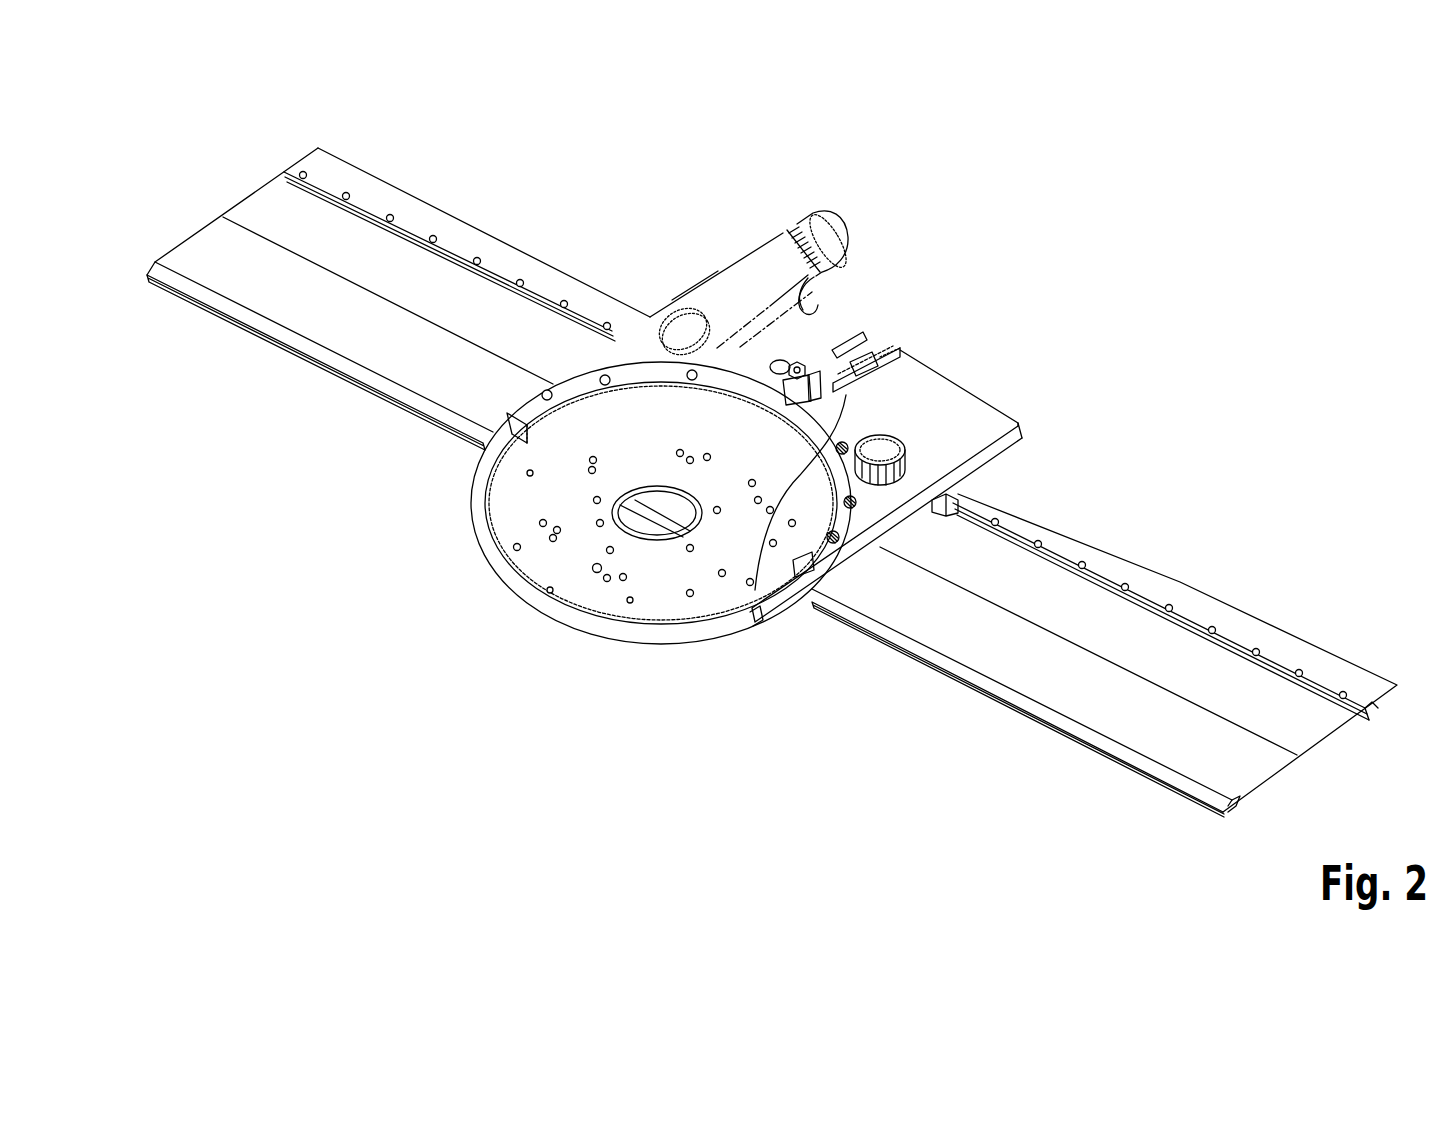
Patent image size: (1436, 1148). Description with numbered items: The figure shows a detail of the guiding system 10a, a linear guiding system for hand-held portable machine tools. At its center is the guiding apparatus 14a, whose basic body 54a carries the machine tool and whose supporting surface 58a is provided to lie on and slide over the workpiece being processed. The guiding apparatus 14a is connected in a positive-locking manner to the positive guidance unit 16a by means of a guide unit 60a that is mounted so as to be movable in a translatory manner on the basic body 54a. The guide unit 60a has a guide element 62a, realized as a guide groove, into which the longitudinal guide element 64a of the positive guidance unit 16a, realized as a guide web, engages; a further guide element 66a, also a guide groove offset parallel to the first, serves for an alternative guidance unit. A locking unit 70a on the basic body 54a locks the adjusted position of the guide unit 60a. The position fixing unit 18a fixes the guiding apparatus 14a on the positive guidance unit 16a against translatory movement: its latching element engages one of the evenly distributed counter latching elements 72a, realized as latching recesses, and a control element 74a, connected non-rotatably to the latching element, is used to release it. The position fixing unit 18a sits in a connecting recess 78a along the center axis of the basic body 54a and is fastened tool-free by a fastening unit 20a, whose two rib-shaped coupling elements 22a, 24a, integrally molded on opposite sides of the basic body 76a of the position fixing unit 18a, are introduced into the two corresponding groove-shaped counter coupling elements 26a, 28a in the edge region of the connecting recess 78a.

The guiding system 10a is at (1052, 220).
The guiding apparatus 14a is at (1018, 375).
The positive guidance unit 16a is at (245, 190).
The position fixing unit 18a is at (818, 328).
The fastening unit 20a is at (798, 416).
The coupling element 22a is at (888, 321).
The coupling element 24a is at (901, 346).
The counter coupling element 26a is at (853, 333).
The counter coupling element 28a is at (895, 360).
The basic body 54a is at (990, 425).
The supporting surface 58a is at (796, 617).
The guide unit 60a is at (1010, 478).
The guide element 62a is at (950, 506).
The longitudinal guide element 64a is at (1032, 541).
The further guide element 66a is at (968, 489).
The locking unit 70a is at (930, 410).
The counter latching element 72a is at (1127, 586).
The control element 74a is at (776, 364).
The basic body 76a is at (755, 590).
The connecting recess 78a is at (868, 330).